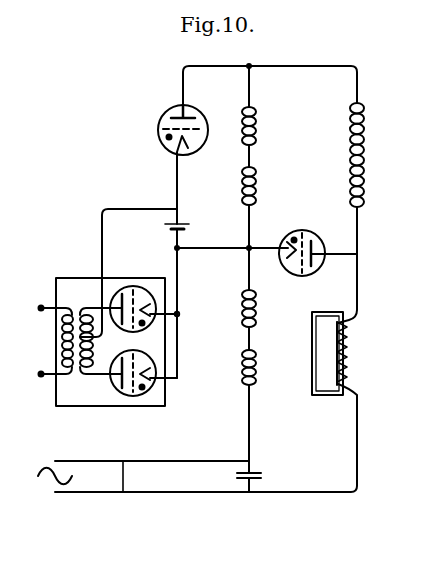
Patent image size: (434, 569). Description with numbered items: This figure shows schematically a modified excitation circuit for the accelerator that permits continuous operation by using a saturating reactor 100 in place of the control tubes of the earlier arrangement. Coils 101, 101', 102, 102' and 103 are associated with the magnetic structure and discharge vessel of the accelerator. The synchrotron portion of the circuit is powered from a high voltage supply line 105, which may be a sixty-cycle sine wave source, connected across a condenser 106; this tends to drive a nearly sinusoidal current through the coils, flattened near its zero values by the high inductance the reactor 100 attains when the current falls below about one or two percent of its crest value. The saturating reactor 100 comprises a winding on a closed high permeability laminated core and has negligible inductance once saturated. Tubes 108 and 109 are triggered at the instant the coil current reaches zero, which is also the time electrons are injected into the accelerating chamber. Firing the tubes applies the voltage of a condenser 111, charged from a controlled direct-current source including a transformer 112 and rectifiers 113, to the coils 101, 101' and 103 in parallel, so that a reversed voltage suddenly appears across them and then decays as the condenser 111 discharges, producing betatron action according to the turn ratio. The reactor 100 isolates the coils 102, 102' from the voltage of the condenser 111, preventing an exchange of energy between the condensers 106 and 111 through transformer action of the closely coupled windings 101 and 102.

The saturating reactor 100 is at (325, 396).
The coil 101 is at (268, 126).
The coil 101' is at (269, 186).
The coil 102 is at (267, 308).
The coil 102' is at (268, 367).
The coil 103 is at (350, 163).
The high voltage supply line 105 is at (123, 461).
The condenser 106 is at (262, 476).
The tube 108 is at (168, 106).
The tube 109 is at (318, 235).
The condenser 111 is at (164, 226).
The transformer 112 is at (80, 322).
The rectifiers 113 is at (145, 358).